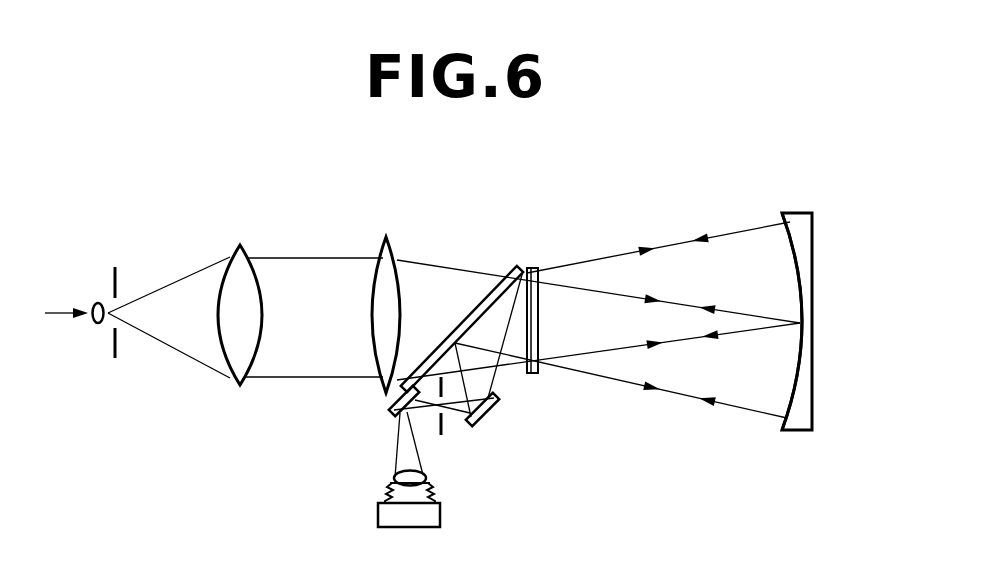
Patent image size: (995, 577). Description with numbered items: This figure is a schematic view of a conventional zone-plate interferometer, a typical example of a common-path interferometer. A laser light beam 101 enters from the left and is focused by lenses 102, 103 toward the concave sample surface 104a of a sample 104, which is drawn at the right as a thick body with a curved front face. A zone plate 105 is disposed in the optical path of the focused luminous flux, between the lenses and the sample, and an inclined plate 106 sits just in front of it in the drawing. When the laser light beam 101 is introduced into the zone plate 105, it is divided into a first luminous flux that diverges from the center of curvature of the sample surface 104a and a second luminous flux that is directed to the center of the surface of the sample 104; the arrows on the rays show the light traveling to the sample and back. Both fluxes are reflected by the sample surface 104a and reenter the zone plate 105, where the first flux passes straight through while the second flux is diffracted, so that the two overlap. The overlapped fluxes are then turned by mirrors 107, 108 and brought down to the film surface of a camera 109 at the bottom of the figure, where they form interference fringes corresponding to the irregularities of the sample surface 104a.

The laser light beam 101 is at (58, 311).
The lens 102 is at (237, 253).
The lens 103 is at (392, 239).
The sample 104 is at (803, 231).
The sample surface 104a is at (790, 239).
The zone plate 105 is at (538, 268).
The beam splitter 106 is at (517, 267).
The mirror 107 is at (490, 410).
The mirror 108 is at (393, 412).
The camera 109 is at (378, 512).